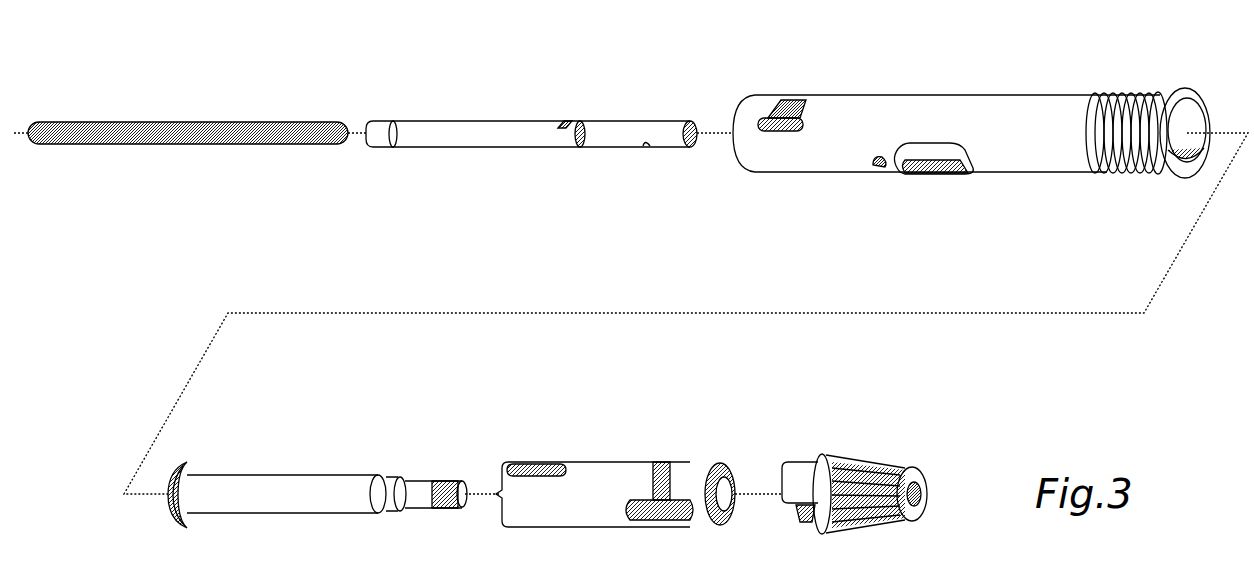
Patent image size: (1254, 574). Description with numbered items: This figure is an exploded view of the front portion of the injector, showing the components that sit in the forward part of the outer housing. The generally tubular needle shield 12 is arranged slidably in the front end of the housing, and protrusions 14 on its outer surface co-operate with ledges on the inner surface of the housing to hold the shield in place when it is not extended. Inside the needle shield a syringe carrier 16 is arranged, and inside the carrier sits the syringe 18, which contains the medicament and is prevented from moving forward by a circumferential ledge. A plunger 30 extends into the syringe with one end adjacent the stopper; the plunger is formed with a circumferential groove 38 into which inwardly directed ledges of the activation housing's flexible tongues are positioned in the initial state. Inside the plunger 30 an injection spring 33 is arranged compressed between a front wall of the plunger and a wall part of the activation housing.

The needle shield 12 is at (1036, 105).
The protrusions 14 is at (777, 100).
The syringe carrier 16 is at (606, 470).
The syringe 18 is at (316, 480).
The plunger 30 is at (492, 120).
The injection spring 33 is at (250, 122).
The circumferential groove 38 is at (580, 121).